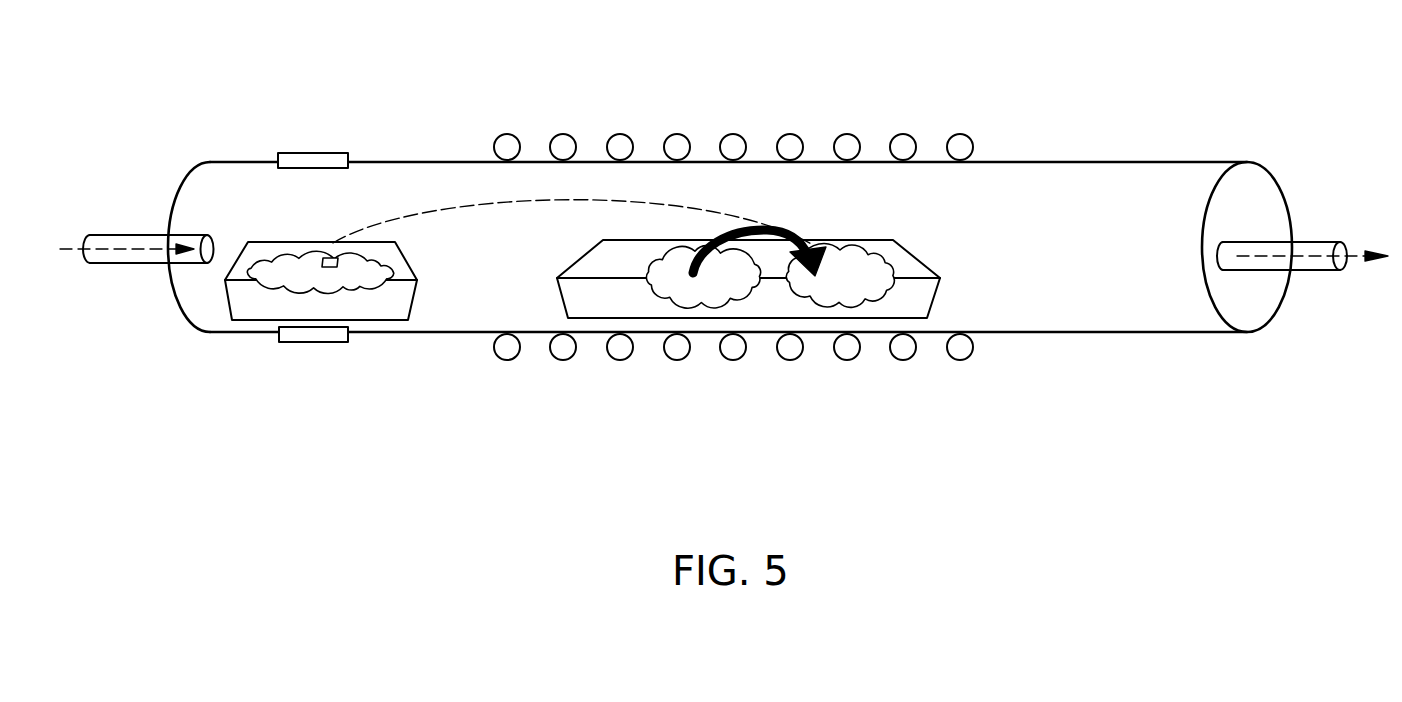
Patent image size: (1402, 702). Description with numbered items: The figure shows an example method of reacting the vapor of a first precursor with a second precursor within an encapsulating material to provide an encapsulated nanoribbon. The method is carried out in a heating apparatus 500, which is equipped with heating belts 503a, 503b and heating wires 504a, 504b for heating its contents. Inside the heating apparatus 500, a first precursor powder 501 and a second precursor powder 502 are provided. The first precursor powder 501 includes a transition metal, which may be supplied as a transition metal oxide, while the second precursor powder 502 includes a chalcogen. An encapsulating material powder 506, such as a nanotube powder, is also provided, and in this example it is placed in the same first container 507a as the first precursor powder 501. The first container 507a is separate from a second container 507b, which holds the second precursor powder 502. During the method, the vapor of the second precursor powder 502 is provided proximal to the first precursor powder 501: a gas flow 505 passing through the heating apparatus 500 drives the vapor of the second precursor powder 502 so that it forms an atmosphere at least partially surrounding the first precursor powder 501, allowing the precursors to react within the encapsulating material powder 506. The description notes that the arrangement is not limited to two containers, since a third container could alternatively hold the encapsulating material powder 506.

The heating apparatus 500 is at (1141, 187).
The first precursor powder 501 is at (672, 283).
The second precursor powder 502 is at (285, 270).
The heating belt 503a is at (305, 163).
The heating belt 503b is at (303, 332).
The heating wire 504a is at (977, 133).
The heating wire 504b is at (977, 375).
The gas flow 505 is at (95, 250).
The encapsulating material powder 506 is at (853, 285).
The first container 507a is at (923, 272).
The second container 507b is at (243, 307).